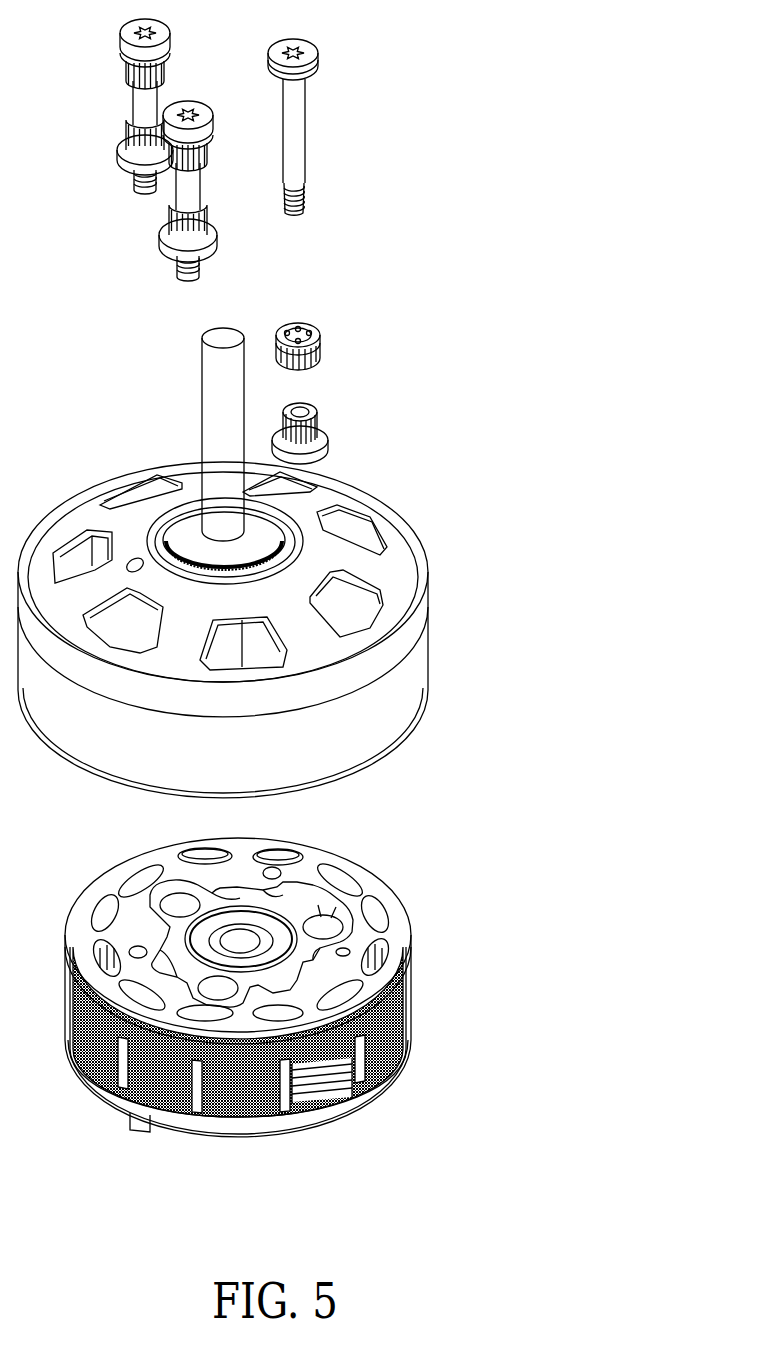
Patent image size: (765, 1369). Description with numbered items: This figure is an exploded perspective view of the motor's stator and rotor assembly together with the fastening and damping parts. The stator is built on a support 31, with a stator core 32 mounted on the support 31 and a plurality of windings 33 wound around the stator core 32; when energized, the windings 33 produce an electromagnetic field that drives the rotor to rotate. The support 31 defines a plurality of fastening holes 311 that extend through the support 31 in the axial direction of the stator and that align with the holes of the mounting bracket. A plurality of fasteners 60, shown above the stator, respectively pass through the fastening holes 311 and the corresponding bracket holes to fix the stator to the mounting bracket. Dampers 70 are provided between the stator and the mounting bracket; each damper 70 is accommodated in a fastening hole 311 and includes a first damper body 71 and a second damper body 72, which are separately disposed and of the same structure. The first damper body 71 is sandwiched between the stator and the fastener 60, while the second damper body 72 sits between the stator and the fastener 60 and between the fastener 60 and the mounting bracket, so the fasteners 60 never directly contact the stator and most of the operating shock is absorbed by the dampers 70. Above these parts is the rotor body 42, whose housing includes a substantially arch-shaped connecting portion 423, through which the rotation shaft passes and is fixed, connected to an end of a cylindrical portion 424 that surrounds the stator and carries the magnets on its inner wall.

The fasteners 60 is at (297, 135).
The dampers 70 is at (368, 391).
The first damper body 71 is at (320, 340).
The second damper body 72 is at (337, 431).
The rotor body 42 is at (310, 563).
The connecting portion 423 is at (377, 577).
The cylindrical portion 424 is at (407, 678).
The support 31 is at (227, 910).
The fastening holes 311 is at (333, 927).
The windings 33 is at (390, 950).
The stator core 32 is at (291, 972).